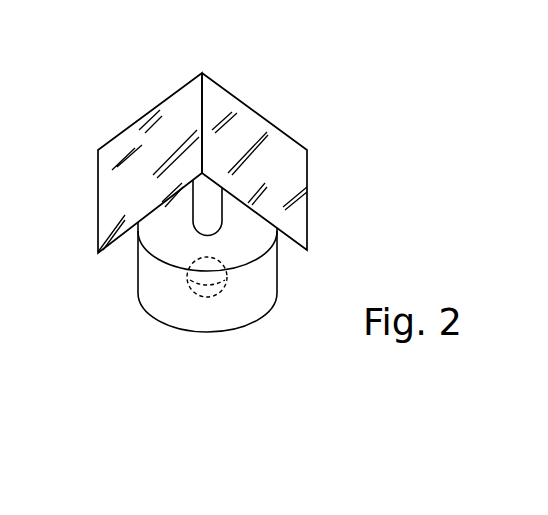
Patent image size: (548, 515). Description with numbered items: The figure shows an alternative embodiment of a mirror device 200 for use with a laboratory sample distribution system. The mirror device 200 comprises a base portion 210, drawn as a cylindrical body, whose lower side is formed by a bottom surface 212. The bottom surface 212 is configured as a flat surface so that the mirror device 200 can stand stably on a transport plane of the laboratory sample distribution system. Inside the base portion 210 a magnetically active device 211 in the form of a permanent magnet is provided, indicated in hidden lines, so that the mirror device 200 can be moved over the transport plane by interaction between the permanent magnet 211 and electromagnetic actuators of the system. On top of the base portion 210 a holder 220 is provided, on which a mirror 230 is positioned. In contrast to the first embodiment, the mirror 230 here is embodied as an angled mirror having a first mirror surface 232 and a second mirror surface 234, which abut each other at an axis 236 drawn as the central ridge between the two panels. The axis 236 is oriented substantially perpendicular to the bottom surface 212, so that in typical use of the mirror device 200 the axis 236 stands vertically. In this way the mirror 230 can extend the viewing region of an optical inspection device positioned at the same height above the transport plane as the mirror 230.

The mirror device 200 is at (108, 372).
The base portion 210 is at (150, 275).
The magnetically active device 211 is at (225, 289).
The bottom surface 212 is at (202, 334).
The holder 220 is at (208, 212).
The mirror 230 is at (279, 142).
The first mirror surface 232 is at (153, 113).
The second mirror surface 234 is at (237, 120).
The axis 236 is at (201, 106).